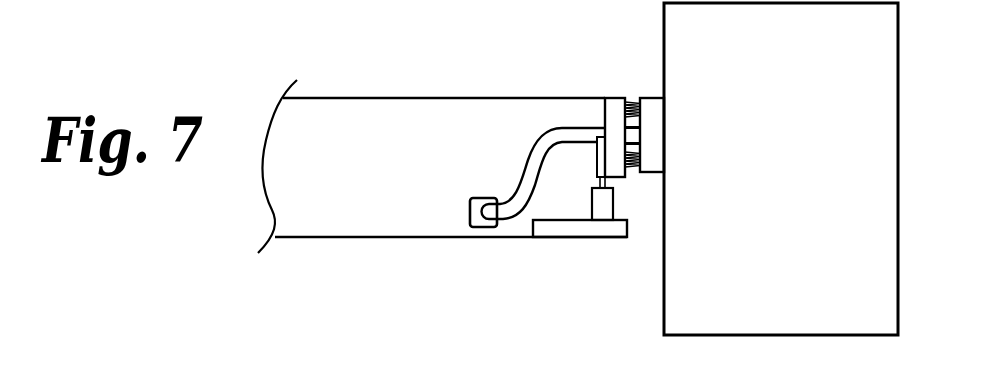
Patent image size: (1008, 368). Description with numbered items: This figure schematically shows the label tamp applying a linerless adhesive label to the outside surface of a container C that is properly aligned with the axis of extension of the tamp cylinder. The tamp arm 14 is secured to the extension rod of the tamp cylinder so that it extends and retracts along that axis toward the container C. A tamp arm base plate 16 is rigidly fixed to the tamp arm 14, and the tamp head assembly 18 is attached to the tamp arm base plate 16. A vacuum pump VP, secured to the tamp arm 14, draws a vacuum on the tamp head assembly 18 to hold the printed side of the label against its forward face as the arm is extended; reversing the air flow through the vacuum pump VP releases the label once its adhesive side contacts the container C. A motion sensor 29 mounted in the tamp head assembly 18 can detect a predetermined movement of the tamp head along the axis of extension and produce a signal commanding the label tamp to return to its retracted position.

The tamp arm 14 is at (321, 140).
The tamp arm base plate 16 is at (562, 238).
The tamp head assembly 18 is at (620, 77).
The motion sensor 29 is at (635, 177).
The vacuum pump VP is at (484, 198).
The container C is at (804, 145).